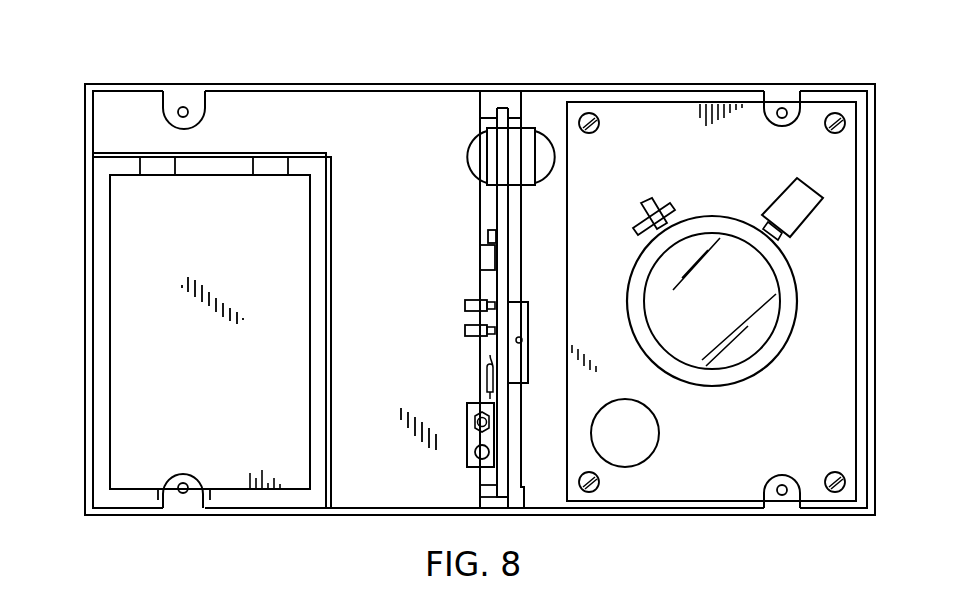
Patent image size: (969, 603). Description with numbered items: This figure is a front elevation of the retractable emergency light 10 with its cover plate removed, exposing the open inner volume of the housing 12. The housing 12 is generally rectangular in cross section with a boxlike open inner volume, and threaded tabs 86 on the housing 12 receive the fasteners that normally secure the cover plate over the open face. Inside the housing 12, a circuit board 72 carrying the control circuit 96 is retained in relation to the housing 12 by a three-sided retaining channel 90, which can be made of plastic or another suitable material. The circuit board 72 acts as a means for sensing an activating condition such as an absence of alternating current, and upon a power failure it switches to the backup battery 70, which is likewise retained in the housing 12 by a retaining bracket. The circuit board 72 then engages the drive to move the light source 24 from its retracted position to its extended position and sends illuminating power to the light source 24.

The retractable emergency light 10 is at (690, 64).
The housing 12 is at (347, 84).
The threaded tabs 86 is at (189, 112).
The backup battery 70 is at (296, 360).
The circuit board 72 is at (503, 108).
The control circuit 96 is at (497, 287).
The three-sided retaining channel 90 is at (497, 492).
The light source 24 is at (775, 328).